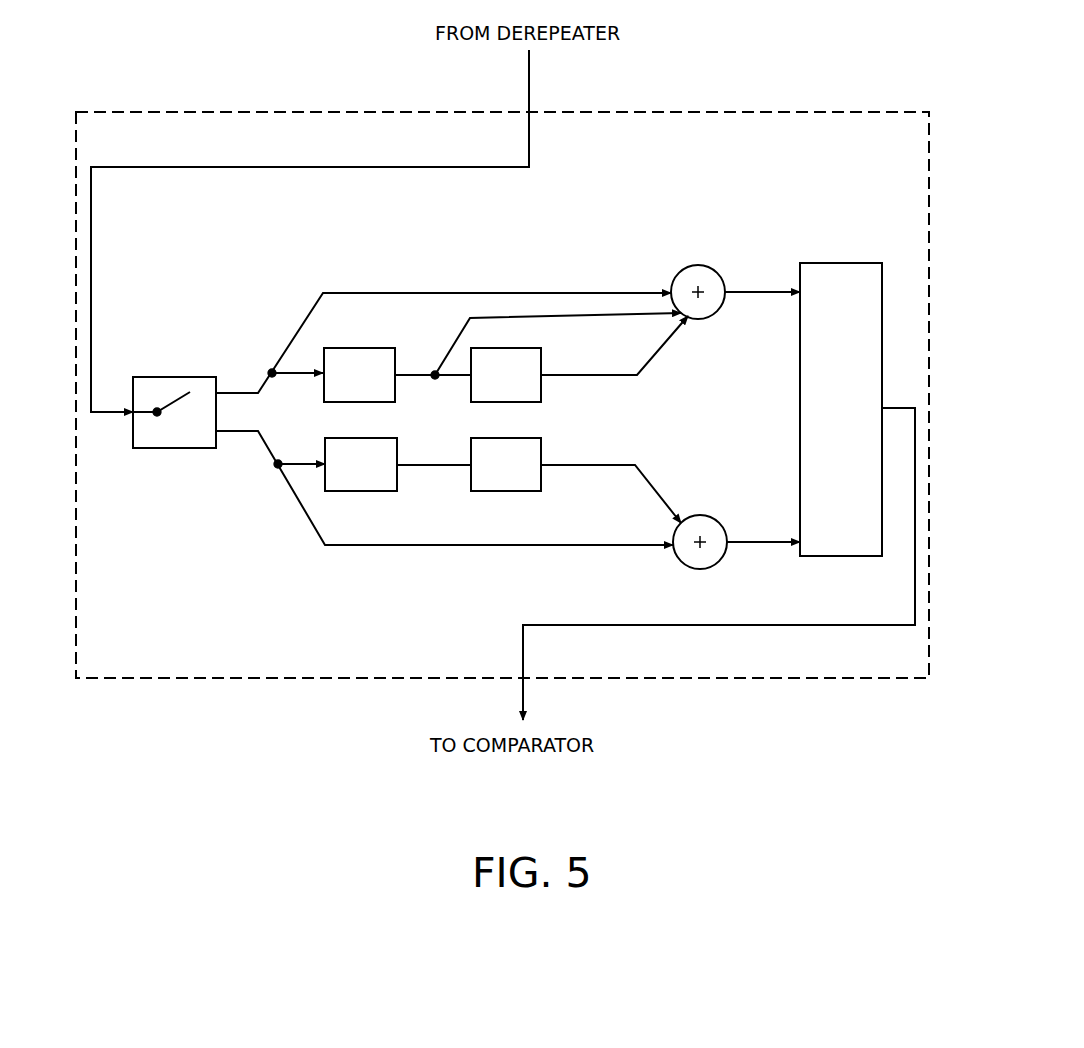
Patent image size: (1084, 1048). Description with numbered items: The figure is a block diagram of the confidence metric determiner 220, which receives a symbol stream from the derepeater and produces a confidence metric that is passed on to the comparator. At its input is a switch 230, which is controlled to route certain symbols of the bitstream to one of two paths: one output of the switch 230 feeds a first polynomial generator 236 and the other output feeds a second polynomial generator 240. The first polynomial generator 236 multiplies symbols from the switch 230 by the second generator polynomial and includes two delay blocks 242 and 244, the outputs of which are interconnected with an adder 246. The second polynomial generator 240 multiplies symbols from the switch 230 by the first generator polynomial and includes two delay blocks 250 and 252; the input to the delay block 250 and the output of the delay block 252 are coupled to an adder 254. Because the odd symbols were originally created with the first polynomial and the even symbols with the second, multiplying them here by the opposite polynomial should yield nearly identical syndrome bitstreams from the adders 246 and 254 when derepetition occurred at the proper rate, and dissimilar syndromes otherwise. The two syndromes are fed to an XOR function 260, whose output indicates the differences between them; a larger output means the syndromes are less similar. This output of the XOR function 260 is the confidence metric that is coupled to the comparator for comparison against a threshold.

The confidence metric determiner 220 is at (733, 110).
The switch 230 is at (150, 377).
The first polynomial generator 236 is at (508, 307).
The second polynomial generator 240 is at (508, 524).
The delay block 242 is at (378, 348).
The delay block 244 is at (545, 402).
The adder 246 is at (700, 265).
The delay block 250 is at (385, 491).
The delay block 252 is at (533, 491).
The adder 254 is at (710, 516).
The XOR function 260 is at (848, 263).